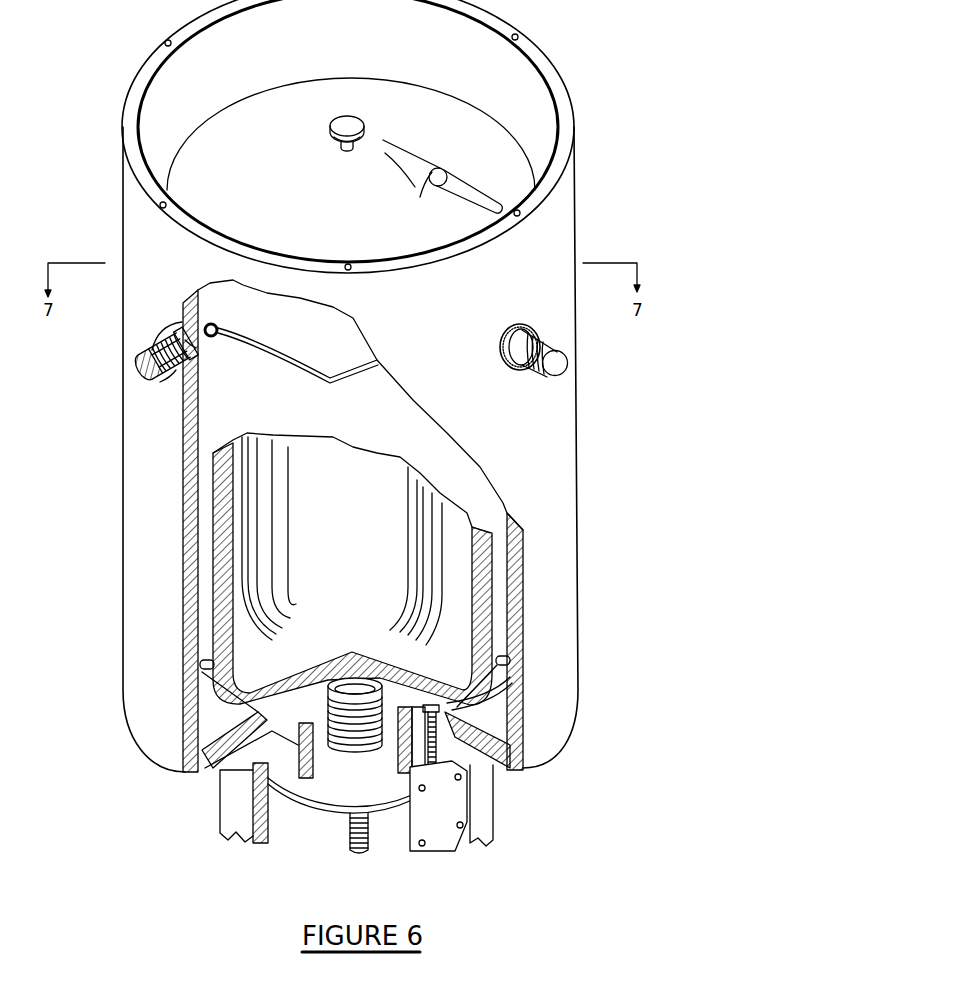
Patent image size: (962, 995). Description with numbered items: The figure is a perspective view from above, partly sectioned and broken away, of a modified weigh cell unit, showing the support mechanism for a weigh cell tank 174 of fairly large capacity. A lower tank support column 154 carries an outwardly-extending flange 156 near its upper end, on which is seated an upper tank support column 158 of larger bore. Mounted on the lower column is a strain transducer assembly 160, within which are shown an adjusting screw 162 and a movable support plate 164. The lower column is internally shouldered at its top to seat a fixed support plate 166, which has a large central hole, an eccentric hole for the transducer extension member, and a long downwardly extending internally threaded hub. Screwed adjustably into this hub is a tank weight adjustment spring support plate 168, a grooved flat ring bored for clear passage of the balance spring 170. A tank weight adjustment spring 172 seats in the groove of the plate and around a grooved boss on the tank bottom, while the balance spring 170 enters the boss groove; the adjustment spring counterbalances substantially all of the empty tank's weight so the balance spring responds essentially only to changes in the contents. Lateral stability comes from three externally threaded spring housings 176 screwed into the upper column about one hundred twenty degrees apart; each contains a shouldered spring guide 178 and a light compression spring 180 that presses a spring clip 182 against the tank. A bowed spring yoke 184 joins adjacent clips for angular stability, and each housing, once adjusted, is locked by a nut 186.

The lower tank support column 154 is at (497, 800).
The outwardly-extending flange 156 is at (232, 777).
The upper tank support column 158 is at (580, 577).
The strain transducer assembly 160 is at (437, 852).
The adjusting screw 162 is at (350, 838).
The movable support plate 164 is at (286, 790).
The fixed support plate 166 is at (262, 718).
The tank weight adjustment spring support plate 168 is at (315, 760).
The balance spring 170 is at (378, 760).
The tank weight adjustment spring 172 is at (330, 746).
The weigh cell tank 174 is at (483, 133).
The spring housing 176 is at (137, 385).
The spring guide 178 is at (173, 375).
The light compression spring 180 is at (197, 350).
The spring clip 182 is at (212, 322).
The spring yoke 184 is at (313, 370).
The nut 186 is at (516, 322).